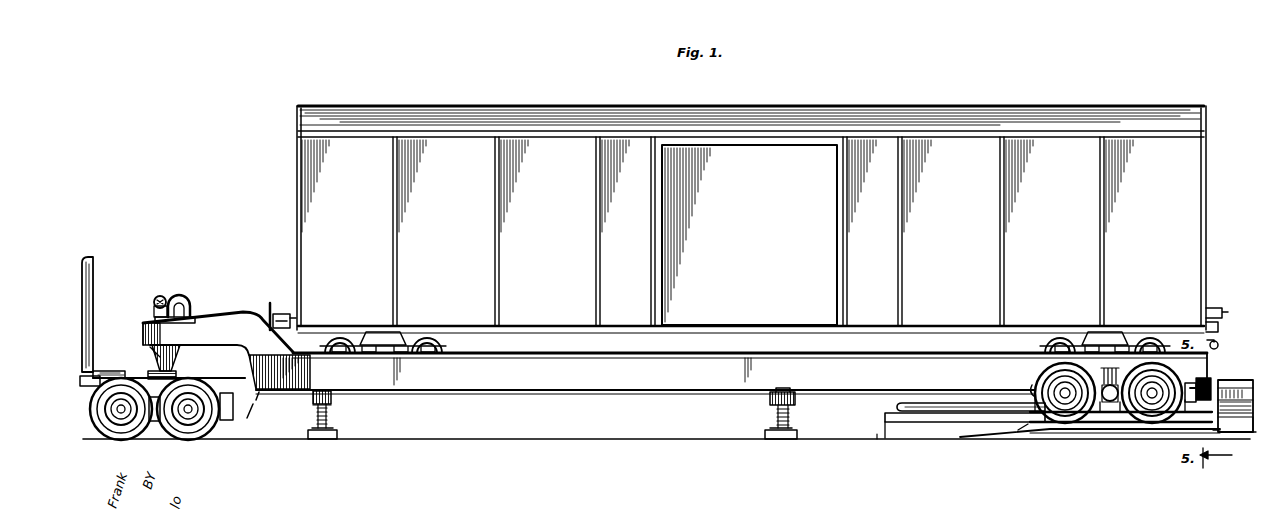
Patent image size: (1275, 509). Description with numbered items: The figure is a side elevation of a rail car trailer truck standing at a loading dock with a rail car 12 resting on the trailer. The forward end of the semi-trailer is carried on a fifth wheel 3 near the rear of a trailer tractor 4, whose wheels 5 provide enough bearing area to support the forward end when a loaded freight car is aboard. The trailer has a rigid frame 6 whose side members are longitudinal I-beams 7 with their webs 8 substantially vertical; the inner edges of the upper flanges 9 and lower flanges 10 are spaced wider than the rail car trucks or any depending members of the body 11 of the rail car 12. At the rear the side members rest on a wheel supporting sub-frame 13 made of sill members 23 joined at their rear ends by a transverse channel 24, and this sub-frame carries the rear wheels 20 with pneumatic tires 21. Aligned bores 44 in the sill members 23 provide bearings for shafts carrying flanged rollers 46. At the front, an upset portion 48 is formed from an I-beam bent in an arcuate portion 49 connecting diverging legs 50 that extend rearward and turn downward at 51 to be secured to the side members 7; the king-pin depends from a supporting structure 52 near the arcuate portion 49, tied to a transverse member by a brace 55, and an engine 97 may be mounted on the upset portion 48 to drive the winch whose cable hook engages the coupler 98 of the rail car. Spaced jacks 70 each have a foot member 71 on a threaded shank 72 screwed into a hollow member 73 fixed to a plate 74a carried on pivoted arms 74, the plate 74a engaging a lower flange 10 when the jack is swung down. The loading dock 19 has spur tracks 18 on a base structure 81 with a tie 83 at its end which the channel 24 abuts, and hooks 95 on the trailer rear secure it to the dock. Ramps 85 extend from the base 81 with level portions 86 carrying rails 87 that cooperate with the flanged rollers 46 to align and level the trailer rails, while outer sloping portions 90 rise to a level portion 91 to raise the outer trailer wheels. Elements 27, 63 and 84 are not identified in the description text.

The fifth wheel 3 is at (175, 379).
The trailer tractor 4 is at (93, 370).
The wheels 5 is at (205, 431).
The frame 6 is at (465, 391).
The I-beams 7 is at (600, 385).
The webs 8 is at (858, 385).
The upper flanges 9 is at (626, 353).
The lower flanges 10 is at (689, 391).
The body 11 is at (412, 333).
The rail car 12 is at (297, 106).
The sub-frame 13 is at (1035, 393).
The spur tracks 18 is at (1224, 384).
The loading dock 19 is at (1233, 433).
The wheels 20 is at (1183, 405).
The pneumatic tires 21 is at (1038, 422).
The sill members 23 is at (1108, 406).
The channel 24 is at (1222, 421).
The bogie spring 27 is at (1113, 376).
The bores 44 is at (1196, 378).
The flanged rollers 46 is at (1190, 412).
The upset portion 48 is at (244, 311).
The arcuate portion 49 is at (143, 326).
The legs 50 is at (226, 340).
The downturned portion 51 is at (269, 318).
The supporting structure 52 is at (153, 348).
The brace 55 is at (160, 357).
The sheave 63 is at (177, 294).
The jacks 70 is at (331, 412).
The foot member 71 is at (337, 434).
The threaded shank 72 is at (789, 411).
The hollow member 73 is at (313, 411).
The arms 74 is at (768, 398).
The plate 74a is at (788, 391).
The base structure 81 is at (1251, 433).
The tie 83 is at (1223, 404).
The ground engaging member 84 is at (877, 434).
The ramps 85 is at (1215, 432).
The level portions 86 is at (885, 414).
The rails 87 is at (922, 403).
The sloping portions 90 is at (968, 434).
The level portion 91 is at (1018, 432).
The hooks 95 is at (1209, 378).
The engine 97 is at (157, 297).
The coupler 98 is at (284, 313).